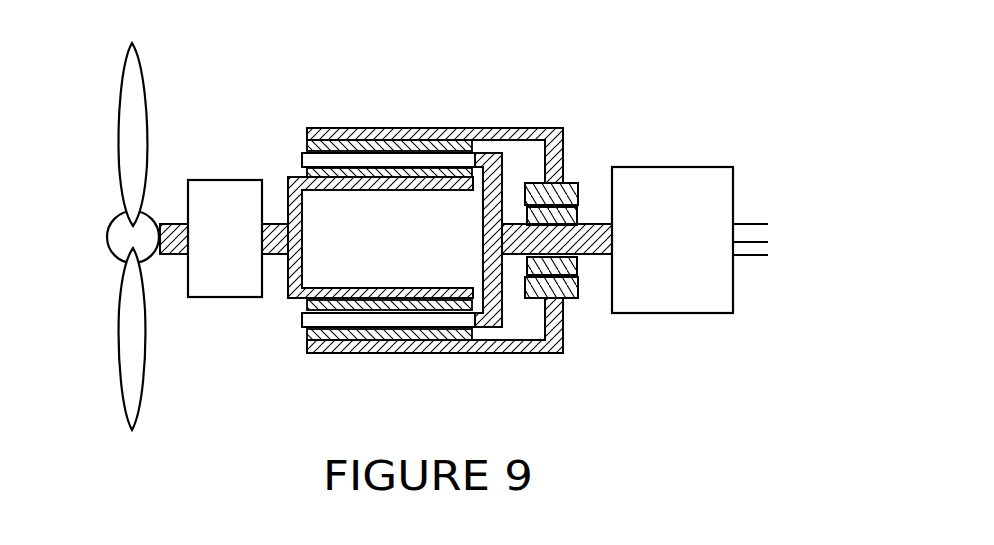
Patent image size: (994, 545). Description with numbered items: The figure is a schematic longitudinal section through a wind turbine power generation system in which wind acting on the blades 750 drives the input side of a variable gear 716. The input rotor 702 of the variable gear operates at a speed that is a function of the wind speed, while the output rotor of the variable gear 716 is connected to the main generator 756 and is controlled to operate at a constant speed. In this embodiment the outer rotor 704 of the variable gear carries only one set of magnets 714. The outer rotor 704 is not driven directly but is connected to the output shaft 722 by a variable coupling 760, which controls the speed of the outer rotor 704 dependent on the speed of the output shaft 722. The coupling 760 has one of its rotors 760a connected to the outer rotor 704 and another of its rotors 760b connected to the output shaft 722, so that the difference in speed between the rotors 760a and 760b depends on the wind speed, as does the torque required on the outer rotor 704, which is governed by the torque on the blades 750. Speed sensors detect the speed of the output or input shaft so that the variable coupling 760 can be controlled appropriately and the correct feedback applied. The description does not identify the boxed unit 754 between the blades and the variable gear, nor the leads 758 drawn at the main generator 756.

The input rotor 702 is at (413, 189).
The outer rotor 704 is at (420, 128).
The magnets 714 is at (307, 146).
The variable gear 716 is at (481, 207).
The output shaft 722 is at (585, 255).
The blades 750 is at (175, 336).
The gearbox 754 is at (245, 216).
The main generator 756 is at (690, 221).
The electrical leads 758 is at (750, 257).
The variable coupling 760 is at (605, 171).
The rotor of the coupling 760a is at (580, 193).
The rotor of the coupling 760b is at (525, 214).